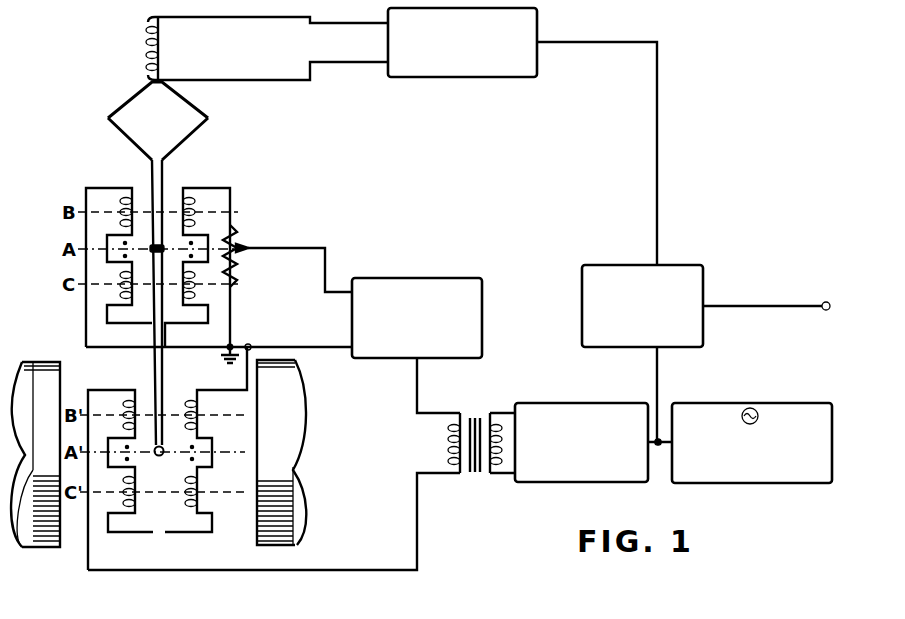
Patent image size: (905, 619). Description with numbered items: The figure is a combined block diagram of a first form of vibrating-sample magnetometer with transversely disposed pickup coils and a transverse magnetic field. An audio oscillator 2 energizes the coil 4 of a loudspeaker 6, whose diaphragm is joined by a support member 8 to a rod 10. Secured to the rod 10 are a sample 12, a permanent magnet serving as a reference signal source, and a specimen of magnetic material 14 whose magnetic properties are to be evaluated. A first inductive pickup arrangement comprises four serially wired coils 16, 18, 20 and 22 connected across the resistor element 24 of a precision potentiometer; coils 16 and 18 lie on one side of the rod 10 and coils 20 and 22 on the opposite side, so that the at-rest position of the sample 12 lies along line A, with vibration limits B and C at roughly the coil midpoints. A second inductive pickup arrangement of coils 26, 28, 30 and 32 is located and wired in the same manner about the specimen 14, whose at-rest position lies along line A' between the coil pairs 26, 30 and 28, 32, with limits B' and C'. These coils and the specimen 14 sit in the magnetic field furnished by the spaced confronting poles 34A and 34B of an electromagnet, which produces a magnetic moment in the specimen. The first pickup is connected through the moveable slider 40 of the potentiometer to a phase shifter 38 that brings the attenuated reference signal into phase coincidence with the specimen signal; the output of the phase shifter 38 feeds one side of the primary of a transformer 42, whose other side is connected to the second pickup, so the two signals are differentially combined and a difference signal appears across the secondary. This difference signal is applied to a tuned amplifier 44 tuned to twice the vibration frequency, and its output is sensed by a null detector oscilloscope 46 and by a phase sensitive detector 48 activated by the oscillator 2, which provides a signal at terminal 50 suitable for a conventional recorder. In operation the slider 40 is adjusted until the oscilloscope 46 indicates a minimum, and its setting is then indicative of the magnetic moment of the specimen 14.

The audio oscillator 2 is at (447, 78).
The coil 4 is at (145, 47).
The loudspeaker 6 is at (126, 98).
The support member 8 is at (120, 133).
The rod 10 is at (166, 172).
The sample 12 is at (152, 248).
The specimen of magnetic material 14 is at (157, 444).
The coil 16 is at (123, 199).
The coil 18 is at (118, 296).
The coil 20 is at (196, 199).
The coil 22 is at (198, 295).
The resistor element 24 is at (241, 233).
The coil 26 is at (124, 400).
The coil 28 is at (124, 506).
The coil 30 is at (199, 396).
The coil 32 is at (185, 512).
The pole 34A is at (46, 362).
The pole 34B is at (284, 361).
The phase shifter 38 is at (421, 278).
The slider 40 is at (260, 254).
The transformer 42 is at (478, 410).
The tuned amplifier 44 is at (551, 487).
The null detector oscilloscope 46 is at (722, 485).
The phase sensitive detector 48 is at (617, 265).
The terminal 50 is at (825, 312).